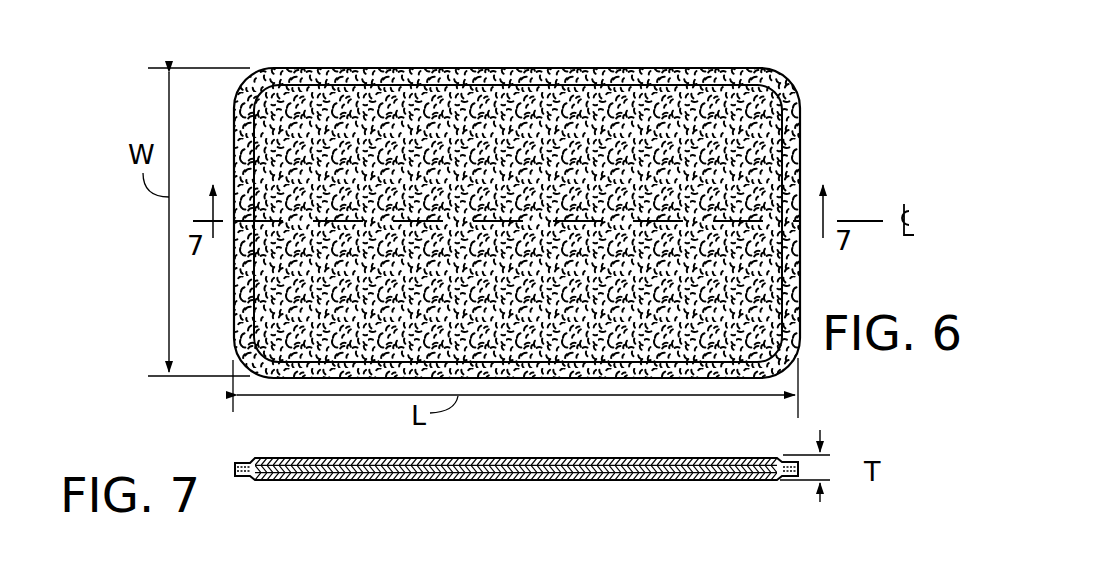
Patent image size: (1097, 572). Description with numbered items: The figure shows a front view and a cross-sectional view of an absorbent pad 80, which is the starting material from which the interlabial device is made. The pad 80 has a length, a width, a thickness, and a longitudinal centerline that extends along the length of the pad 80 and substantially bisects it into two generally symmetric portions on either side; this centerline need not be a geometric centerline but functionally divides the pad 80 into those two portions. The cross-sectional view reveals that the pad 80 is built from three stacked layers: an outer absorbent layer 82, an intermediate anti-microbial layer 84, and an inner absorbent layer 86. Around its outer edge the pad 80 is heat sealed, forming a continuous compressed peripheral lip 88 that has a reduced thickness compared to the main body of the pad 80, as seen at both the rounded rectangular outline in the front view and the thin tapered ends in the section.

In FIG. 6, the pad 80 is at (570, 200).
In FIG. 7, the pad 80 is at (516, 477).
In FIG. 7, the outer absorbent layer 82 is at (508, 459).
In FIG. 7, the intermediate (anti-microbial) layer 84 is at (537, 480).
In FIG. 7, the inner absorbent layer 86 is at (587, 480).
In FIG. 6, the continuous compressed peripheral lip 88 is at (494, 80).
In FIG. 7, the continuous compressed peripheral lip 88 is at (245, 459).